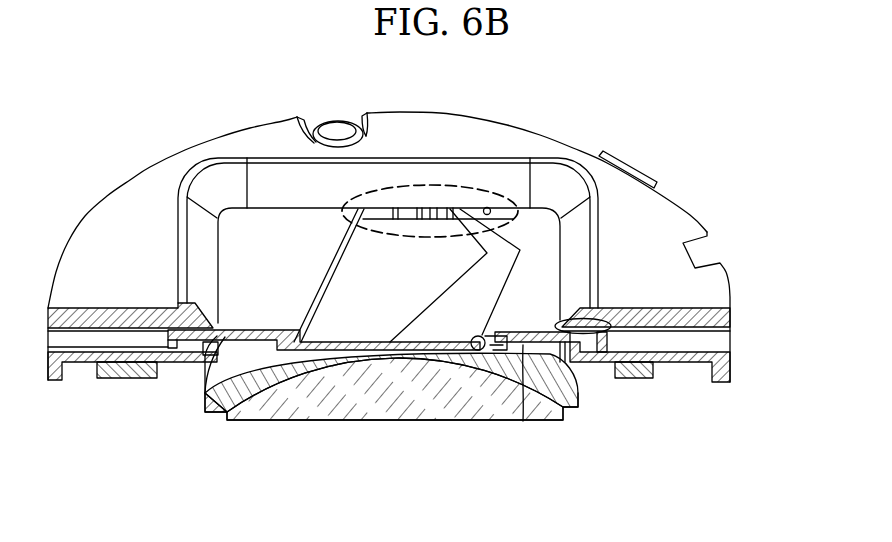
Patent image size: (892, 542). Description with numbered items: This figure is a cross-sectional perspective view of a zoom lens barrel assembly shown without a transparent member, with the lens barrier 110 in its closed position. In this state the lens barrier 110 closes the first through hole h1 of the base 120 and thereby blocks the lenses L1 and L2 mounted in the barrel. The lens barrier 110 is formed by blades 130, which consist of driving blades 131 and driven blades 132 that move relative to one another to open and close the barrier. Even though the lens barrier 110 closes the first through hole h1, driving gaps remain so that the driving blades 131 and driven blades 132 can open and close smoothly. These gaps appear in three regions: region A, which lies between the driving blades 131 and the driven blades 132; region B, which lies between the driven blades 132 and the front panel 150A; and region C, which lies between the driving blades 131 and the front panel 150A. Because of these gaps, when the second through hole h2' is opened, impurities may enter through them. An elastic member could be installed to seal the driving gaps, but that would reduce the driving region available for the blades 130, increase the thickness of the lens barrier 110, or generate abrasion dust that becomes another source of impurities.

The lens barrier 110 is at (609, 389).
The base 120 is at (737, 382).
The front panel 150A is at (738, 288).
The blades 130 is at (391, 423).
The driving blades 131 is at (430, 363).
The driven blades 132 is at (523, 421).
The lens L1 is at (327, 363).
The lens L2 is at (352, 403).
The region A is at (500, 340).
The region B is at (600, 318).
The region C is at (458, 186).
The first through hole h1 is at (570, 403).
The second through hole h2' is at (588, 170).